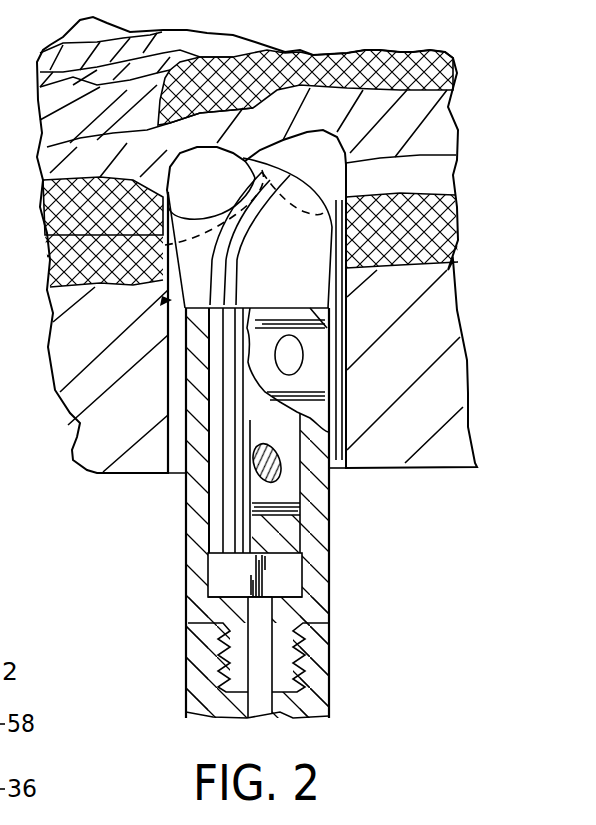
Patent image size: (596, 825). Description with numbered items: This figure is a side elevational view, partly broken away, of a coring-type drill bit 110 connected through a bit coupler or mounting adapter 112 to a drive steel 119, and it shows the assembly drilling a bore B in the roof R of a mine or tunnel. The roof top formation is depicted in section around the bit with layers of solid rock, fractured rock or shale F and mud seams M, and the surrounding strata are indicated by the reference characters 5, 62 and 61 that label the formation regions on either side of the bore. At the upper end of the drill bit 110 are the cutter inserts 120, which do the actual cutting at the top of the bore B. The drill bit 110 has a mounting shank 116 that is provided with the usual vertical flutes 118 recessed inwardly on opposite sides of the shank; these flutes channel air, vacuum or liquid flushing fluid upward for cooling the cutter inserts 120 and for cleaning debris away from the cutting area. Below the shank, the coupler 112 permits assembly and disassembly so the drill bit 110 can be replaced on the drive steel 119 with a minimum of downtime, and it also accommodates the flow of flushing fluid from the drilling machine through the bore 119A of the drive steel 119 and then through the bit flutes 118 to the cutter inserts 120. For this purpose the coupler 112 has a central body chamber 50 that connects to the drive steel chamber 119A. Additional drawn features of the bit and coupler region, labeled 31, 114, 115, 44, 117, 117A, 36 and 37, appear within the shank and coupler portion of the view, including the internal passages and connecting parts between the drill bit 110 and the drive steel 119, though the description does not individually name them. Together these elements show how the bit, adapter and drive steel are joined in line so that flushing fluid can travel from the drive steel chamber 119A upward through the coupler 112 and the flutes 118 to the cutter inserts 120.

The formation rock 5 is at (269, 245).
The fractured rock or shale F is at (305, 71).
The mud seams M is at (425, 230).
The upper layer 62 is at (85, 206).
The lower layer 61 is at (86, 261).
The coring-type drill bit 110 is at (87, 316).
The bore B is at (104, 332).
The roof R is at (133, 504).
The cutter inserts 120 is at (325, 160).
The channel 31 is at (215, 292).
The sleeve strip 114 is at (366, 315).
The shoulder 115 is at (364, 336).
The cutter body opening 44 is at (290, 357).
The pin 117 is at (280, 472).
The guide lines 117A is at (253, 459).
The vertical flutes 118 is at (230, 478).
The mounting shank 116 is at (290, 523).
The seat block 36 is at (186, 564).
The central body chamber 50 is at (232, 576).
The threads 37 is at (223, 658).
The bit coupler or mounting adapter 112 is at (347, 583).
The drive steel 119 is at (350, 651).
The bore of the drive steel 119A is at (263, 707).